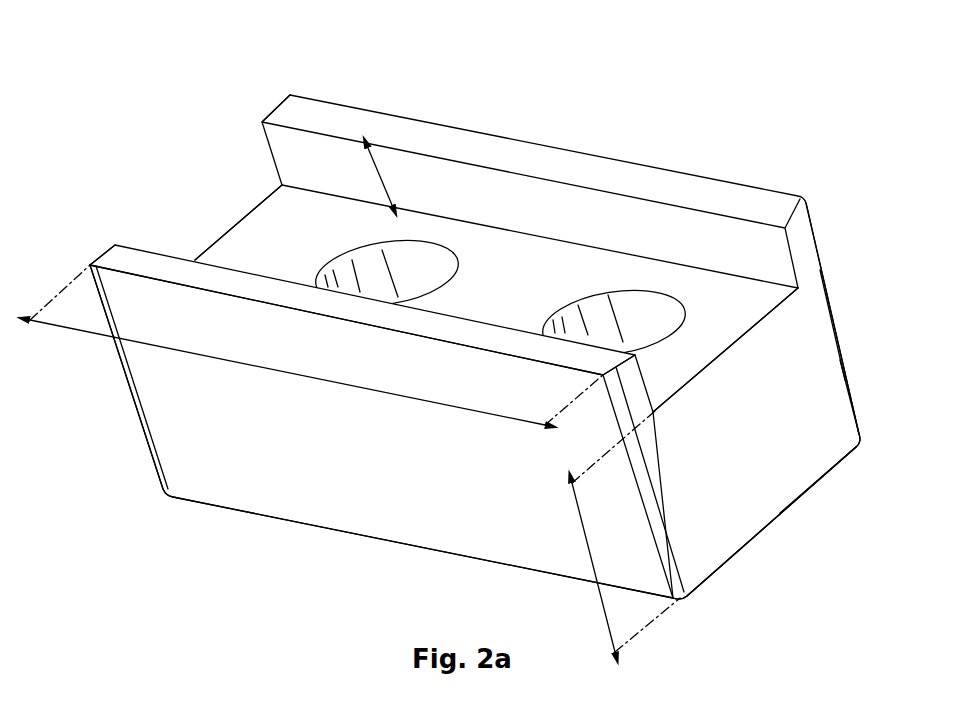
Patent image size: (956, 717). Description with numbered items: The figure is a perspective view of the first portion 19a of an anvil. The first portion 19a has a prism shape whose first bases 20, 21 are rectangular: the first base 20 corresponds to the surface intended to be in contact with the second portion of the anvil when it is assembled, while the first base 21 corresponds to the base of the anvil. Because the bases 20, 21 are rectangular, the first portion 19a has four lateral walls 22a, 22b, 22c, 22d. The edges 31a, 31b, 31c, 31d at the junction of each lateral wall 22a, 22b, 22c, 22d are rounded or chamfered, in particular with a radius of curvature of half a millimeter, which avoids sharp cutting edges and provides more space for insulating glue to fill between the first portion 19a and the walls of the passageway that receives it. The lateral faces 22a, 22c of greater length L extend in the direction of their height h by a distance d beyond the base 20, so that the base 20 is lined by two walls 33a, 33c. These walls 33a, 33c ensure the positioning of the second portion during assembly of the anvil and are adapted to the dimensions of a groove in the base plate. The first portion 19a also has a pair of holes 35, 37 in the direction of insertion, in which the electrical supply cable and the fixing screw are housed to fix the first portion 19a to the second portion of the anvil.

The first portion 19a is at (797, 553).
The first base 20 is at (748, 297).
The first base 21 is at (853, 440).
The lateral wall 22a is at (268, 435).
The lateral wall 22b is at (680, 480).
The lateral wall 22c is at (834, 234).
The lateral wall 22d is at (195, 216).
The edge 31a is at (657, 532).
The edge 31b is at (836, 311).
The edge 31c is at (290, 93).
The edge 31d is at (130, 396).
The wall 33a is at (133, 263).
The wall 33c is at (707, 236).
The hole 35 is at (407, 280).
The hole 37 is at (628, 332).
The distance d is at (380, 168).
The length L is at (143, 342).
The height h is at (583, 527).